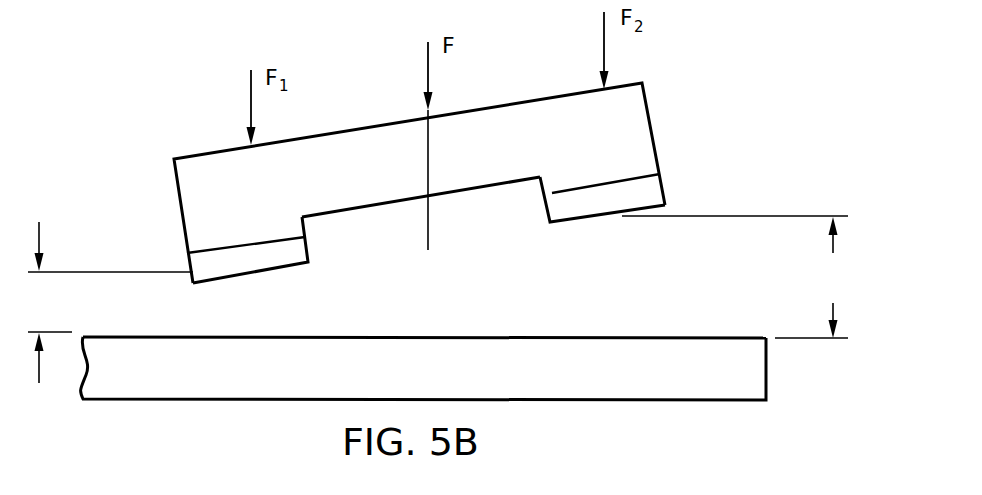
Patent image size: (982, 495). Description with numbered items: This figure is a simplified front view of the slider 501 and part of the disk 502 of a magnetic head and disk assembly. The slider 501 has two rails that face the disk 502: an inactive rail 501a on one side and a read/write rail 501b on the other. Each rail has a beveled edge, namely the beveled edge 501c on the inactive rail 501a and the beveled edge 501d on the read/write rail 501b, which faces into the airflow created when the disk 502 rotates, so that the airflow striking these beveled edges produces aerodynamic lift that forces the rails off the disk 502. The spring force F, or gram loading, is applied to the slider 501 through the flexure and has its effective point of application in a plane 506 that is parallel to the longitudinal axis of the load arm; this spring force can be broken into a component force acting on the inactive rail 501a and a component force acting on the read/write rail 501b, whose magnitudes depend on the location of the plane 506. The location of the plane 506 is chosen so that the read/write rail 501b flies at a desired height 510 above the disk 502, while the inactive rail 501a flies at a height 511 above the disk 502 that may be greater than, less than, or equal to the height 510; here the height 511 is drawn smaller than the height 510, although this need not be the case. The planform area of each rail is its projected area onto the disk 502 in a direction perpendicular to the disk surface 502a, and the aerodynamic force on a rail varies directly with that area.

The slider 501 is at (653, 130).
The inactive rail 501a is at (287, 270).
The read/write rail 501b is at (570, 222).
The beveled edge 501c is at (208, 257).
The beveled edge 501d is at (658, 190).
The disk 502 is at (147, 388).
The disk surface 502a is at (173, 333).
The plane 506 is at (428, 220).
The height of the read/write rail 510 is at (736, 277).
The height of the inactive rail 511 is at (107, 302).